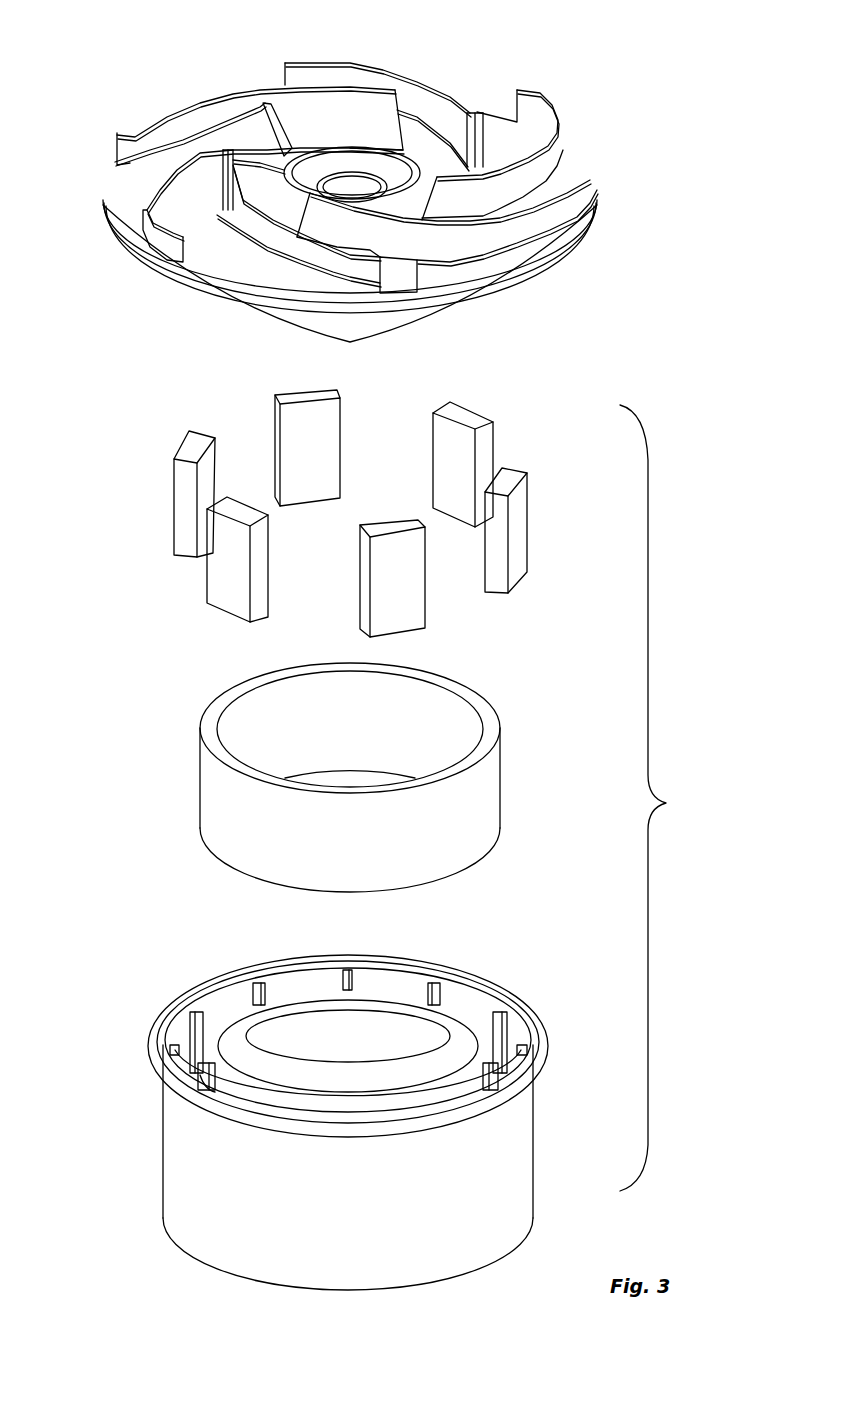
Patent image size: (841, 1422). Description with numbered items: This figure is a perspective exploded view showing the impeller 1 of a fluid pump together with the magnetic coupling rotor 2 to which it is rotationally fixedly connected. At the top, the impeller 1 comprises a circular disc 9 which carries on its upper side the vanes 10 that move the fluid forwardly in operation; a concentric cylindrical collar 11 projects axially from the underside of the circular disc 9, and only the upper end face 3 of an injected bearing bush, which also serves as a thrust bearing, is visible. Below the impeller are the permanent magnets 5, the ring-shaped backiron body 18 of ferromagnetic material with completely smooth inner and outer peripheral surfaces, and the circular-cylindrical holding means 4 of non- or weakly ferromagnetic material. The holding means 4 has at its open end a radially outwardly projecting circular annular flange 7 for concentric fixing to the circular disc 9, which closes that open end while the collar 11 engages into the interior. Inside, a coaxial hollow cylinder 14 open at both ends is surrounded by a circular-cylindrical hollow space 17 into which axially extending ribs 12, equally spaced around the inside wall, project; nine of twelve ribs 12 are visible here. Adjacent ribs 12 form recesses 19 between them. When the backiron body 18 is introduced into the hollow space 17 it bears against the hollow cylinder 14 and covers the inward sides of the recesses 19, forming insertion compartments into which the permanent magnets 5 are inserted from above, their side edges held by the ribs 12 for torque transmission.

The impeller 1 is at (329, 190).
The magnetic coupling rotor 2 is at (656, 798).
The upper end face 3 is at (258, 170).
The circular-cylindrical holding means 4 is at (346, 1104).
The permanent magnets 5 is at (457, 438).
The circular annular flange 7 is at (155, 1018).
The circular disc 9 is at (118, 212).
The vanes 10 is at (118, 133).
The cylindrical collar 11 is at (318, 335).
The ribs 12 is at (346, 970).
The hollow cylinder 14 is at (398, 1103).
The circular-cylindrical hollow space 17 is at (232, 1085).
The backiron body 18 is at (235, 806).
The recesses 19 is at (344, 995).